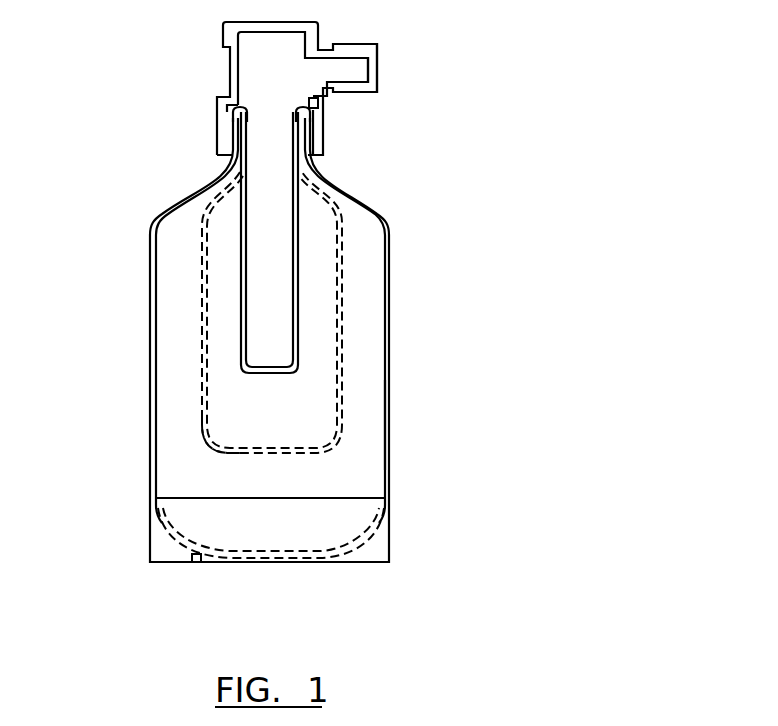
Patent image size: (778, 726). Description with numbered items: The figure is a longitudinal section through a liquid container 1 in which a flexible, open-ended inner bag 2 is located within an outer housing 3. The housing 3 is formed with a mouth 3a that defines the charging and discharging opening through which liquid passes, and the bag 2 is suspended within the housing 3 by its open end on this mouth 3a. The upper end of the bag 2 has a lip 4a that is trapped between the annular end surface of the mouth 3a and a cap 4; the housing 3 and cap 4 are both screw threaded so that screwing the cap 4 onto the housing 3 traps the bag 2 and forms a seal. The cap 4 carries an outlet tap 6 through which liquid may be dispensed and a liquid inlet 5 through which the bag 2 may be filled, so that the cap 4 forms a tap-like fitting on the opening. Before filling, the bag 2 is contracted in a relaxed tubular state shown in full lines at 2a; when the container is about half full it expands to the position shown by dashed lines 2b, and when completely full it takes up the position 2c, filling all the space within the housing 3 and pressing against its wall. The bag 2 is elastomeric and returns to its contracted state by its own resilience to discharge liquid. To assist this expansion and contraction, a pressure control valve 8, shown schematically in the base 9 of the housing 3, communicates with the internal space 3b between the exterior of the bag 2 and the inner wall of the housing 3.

The container 1 is at (396, 195).
The inner bag 2 is at (297, 225).
The relaxed tubular state of the bag 2a is at (238, 329).
The half-full position of the bag 2b is at (205, 440).
The completely full position of the bag 2c is at (350, 548).
The outer housing 3 is at (389, 342).
The mouth 3a is at (232, 142).
The internal space 3b is at (370, 437).
The cap 4 is at (318, 138).
The lip 4a is at (317, 109).
The liquid inlet 5 is at (260, 67).
The outlet tap 6 is at (357, 72).
The pressure control valve 8 is at (190, 560).
The base 9 is at (382, 545).